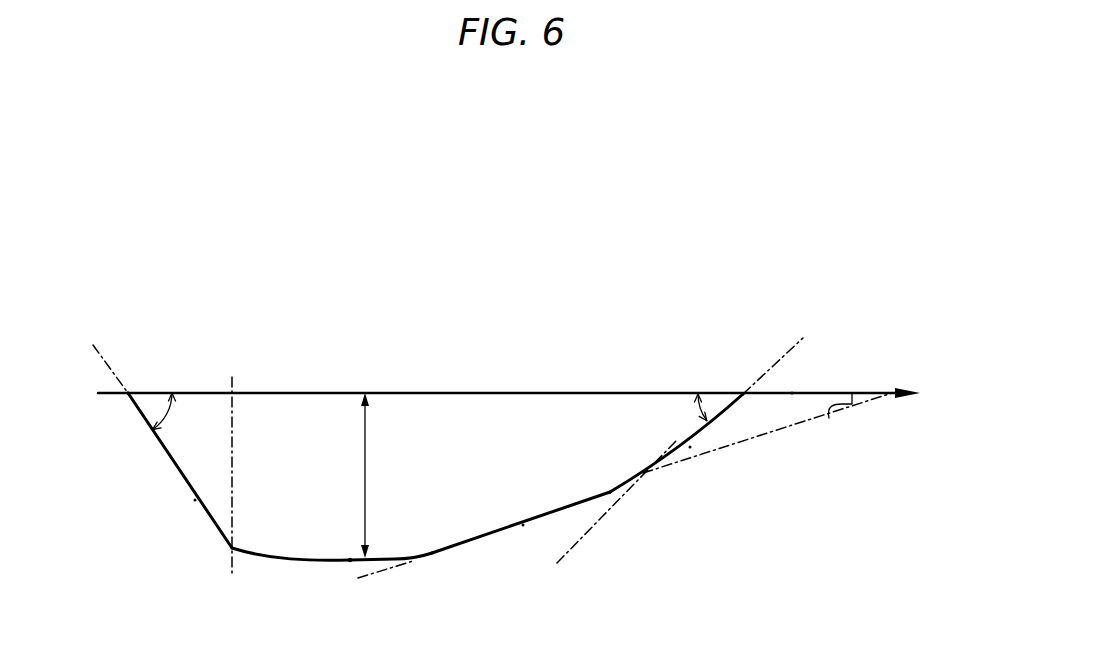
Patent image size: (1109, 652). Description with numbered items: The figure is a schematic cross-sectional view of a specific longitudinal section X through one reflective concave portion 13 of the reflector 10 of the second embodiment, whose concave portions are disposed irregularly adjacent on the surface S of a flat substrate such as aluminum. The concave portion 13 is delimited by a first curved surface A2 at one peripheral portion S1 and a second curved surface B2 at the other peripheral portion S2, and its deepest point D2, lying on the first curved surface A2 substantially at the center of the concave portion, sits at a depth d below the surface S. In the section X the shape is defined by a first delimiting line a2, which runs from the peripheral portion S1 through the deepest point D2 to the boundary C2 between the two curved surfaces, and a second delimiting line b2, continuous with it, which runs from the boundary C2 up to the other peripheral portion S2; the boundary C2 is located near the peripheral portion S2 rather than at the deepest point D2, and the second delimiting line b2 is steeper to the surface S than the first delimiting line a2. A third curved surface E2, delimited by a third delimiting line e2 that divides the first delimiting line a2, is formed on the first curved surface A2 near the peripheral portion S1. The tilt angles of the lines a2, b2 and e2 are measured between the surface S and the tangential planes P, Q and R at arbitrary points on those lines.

The reflector 10 is at (461, 397).
The reflective concave portion 13 is at (608, 478).
The specific longitudinal section X is at (513, 379).
The tangential plane Q is at (105, 363).
The other peripheral portion S2 is at (129, 392).
The second delimiting line b2 is at (165, 456).
The second curved surface B2 is at (197, 497).
The boundary C2 is at (230, 550).
The deepest point D2 is at (352, 560).
The depth d is at (374, 475).
The first delimiting line a2 is at (372, 561).
The third curved surface E2 is at (520, 528).
The third delimiting line e2 is at (560, 512).
The one peripheral portion S1 is at (743, 393).
The tangential plane P is at (782, 358).
The surface of the substrate S is at (792, 393).
The tangential plane R is at (773, 436).
The first curved surface A2 is at (686, 448).